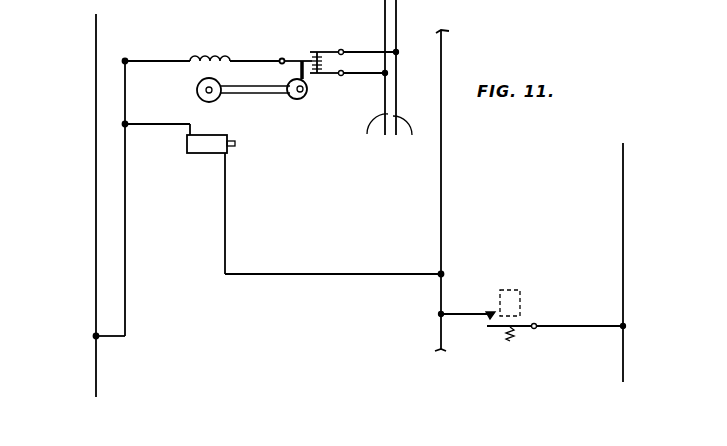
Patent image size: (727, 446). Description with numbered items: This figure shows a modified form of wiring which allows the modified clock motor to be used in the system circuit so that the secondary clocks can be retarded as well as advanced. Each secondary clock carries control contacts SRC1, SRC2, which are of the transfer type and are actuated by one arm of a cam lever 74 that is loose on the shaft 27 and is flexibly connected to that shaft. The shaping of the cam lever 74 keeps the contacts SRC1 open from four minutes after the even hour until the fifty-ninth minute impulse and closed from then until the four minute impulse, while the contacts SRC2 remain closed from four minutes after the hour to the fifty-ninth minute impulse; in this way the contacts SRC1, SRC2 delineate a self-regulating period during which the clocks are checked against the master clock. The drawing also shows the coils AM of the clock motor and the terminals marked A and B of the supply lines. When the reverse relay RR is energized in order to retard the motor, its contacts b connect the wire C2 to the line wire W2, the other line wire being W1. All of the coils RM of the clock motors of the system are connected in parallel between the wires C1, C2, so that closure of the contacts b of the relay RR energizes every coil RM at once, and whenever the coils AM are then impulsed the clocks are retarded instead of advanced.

The coil AM is at (216, 56).
The control contact SRC1 is at (329, 40).
The control contact SRC2 is at (328, 76).
The shaft 27 is at (242, 96).
The cam lever 74 is at (291, 104).
The terminal A is at (370, 137).
The terminal B is at (404, 138).
The coil RM is at (205, 146).
The line wire W1 is at (96, 223).
The line wire W2 is at (623, 226).
The wire C1 is at (125, 295).
The wire C2 is at (440, 300).
The reverse relay RR is at (522, 302).
The contacts b is at (484, 321).